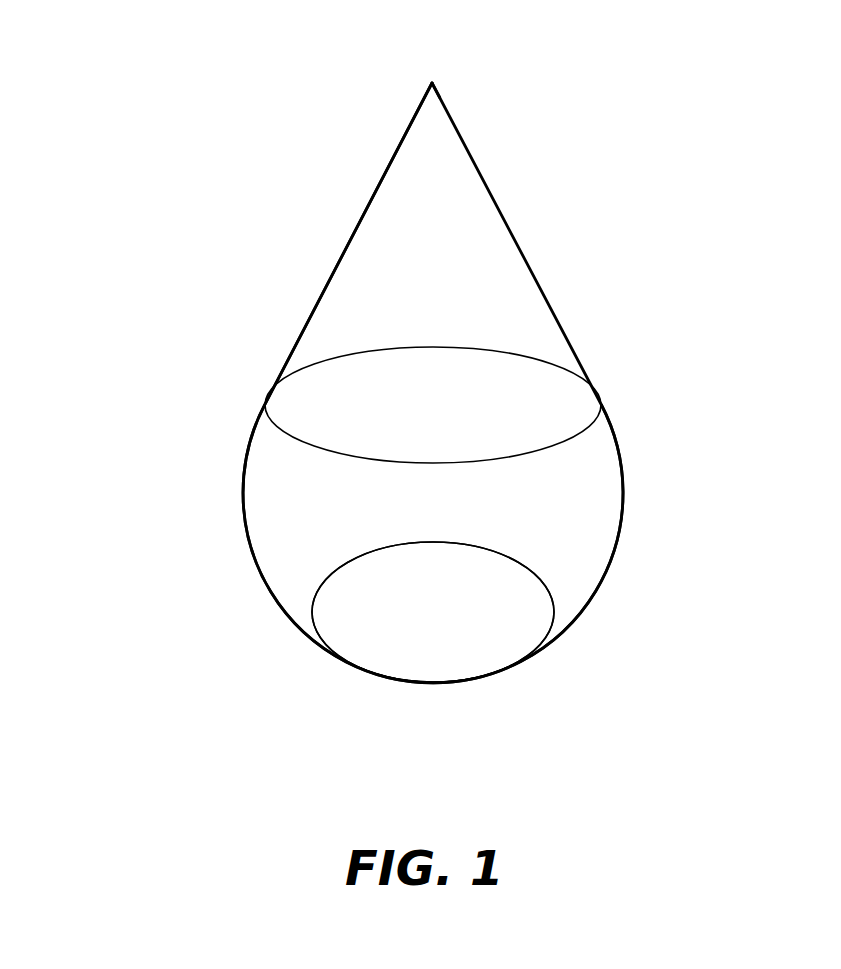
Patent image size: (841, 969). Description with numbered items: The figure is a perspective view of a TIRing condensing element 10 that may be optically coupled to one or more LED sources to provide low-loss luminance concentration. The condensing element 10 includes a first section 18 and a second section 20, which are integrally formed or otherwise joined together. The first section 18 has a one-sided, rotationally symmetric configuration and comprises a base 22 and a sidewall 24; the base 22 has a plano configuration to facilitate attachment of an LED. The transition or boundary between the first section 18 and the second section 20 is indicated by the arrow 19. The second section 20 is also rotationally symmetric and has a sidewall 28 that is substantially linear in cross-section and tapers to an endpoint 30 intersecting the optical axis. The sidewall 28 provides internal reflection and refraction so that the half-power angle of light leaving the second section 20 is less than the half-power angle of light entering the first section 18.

The TIRing condensing element 10 is at (472, 405).
The first section 18 is at (645, 606).
The arrow (transition or boundary) 19 is at (224, 471).
The second section 20 is at (562, 238).
The base 22 is at (415, 673).
The sidewall 24 is at (288, 600).
The sidewall 28 is at (338, 285).
The endpoint 30 is at (437, 86).